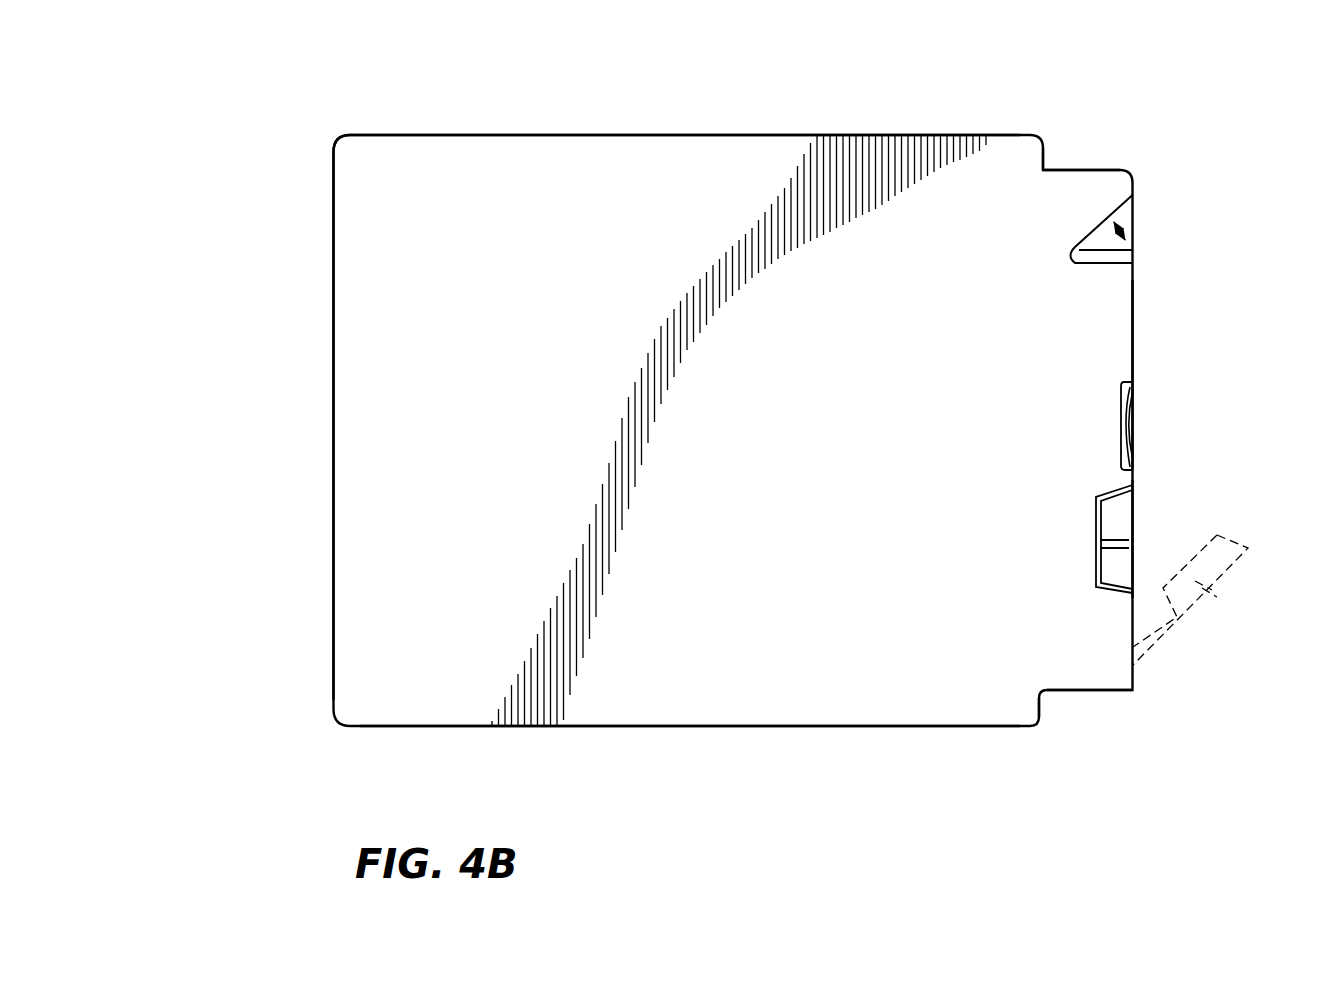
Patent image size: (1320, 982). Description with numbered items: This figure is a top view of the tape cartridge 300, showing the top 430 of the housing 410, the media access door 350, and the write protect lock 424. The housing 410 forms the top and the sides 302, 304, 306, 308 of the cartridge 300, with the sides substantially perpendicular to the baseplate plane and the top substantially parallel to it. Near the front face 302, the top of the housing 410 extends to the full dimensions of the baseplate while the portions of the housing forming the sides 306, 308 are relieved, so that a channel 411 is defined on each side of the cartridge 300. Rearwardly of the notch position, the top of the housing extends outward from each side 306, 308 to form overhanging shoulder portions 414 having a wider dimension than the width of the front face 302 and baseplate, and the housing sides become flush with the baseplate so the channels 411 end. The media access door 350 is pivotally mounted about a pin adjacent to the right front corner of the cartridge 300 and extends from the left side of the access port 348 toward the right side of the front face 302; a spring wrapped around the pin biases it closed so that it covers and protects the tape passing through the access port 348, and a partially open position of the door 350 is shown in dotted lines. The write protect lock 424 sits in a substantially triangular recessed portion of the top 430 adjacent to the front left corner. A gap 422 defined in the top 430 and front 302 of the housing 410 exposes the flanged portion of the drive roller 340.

The tape cartridge 300 is at (313, 215).
The front face 302 is at (1152, 346).
The side 304 is at (308, 550).
The side 306 is at (624, 125).
The side 308 is at (670, 727).
The drive roller 340 is at (1132, 453).
The access port 348 is at (1138, 594).
The media access door 350 is at (1122, 520).
The housing 410 is at (425, 147).
The channel 411 is at (1155, 170).
The overhanging shoulder portion 414 is at (1022, 155).
The gap 422 is at (1132, 390).
The write protect lock 424 is at (1140, 255).
The top of the housing 430 is at (700, 157).